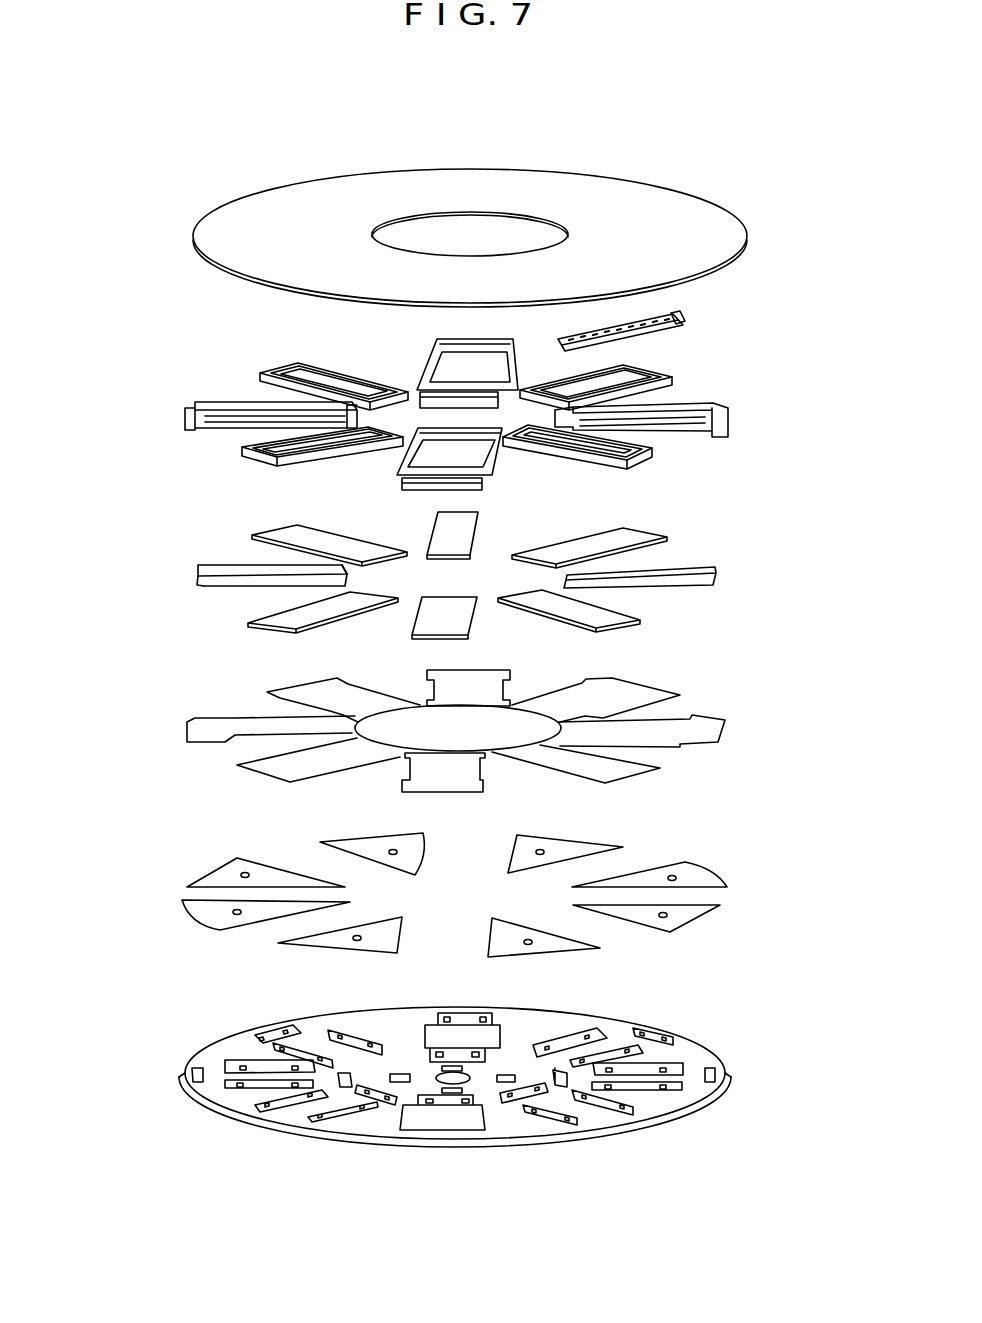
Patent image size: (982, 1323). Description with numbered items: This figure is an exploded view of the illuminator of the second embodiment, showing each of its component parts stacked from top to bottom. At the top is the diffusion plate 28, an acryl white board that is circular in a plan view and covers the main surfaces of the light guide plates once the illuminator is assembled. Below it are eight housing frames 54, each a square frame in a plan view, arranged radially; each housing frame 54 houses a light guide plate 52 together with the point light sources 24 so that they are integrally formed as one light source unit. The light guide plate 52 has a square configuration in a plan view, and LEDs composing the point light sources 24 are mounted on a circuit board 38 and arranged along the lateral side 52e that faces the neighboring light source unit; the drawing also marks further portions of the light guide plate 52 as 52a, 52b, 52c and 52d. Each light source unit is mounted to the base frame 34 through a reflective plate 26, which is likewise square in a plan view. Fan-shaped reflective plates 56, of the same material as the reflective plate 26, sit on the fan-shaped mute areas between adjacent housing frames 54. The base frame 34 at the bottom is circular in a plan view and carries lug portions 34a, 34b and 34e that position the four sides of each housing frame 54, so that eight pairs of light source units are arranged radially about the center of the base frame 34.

The point light sources 24 is at (686, 325).
The reflective plate 26 is at (207, 732).
The diffusion plate 28 is at (624, 178).
The base frame 34 is at (440, 1121).
The lug portion 34a is at (387, 1097).
The lug portion 34b is at (188, 1070).
The lug portion 34e is at (330, 1112).
The circuit board 38 is at (682, 318).
The light guide plate 52 is at (390, 582).
The plate end face 52a is at (348, 576).
The plate side face 52b is at (198, 577).
The plate bottom edge 52c is at (206, 599).
The plate top face 52d is at (221, 552).
The lateral side 52e is at (262, 609).
The housing frame 54 is at (276, 366).
The reflective plate 56 is at (220, 873).